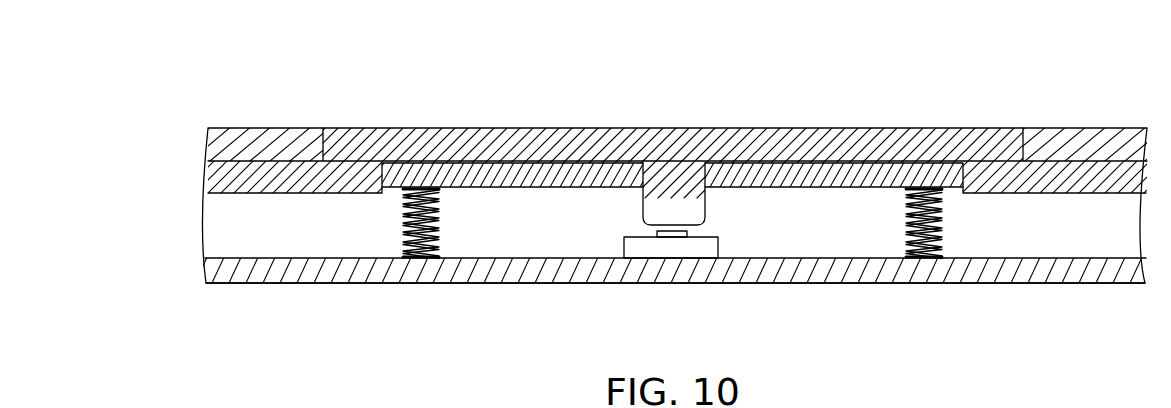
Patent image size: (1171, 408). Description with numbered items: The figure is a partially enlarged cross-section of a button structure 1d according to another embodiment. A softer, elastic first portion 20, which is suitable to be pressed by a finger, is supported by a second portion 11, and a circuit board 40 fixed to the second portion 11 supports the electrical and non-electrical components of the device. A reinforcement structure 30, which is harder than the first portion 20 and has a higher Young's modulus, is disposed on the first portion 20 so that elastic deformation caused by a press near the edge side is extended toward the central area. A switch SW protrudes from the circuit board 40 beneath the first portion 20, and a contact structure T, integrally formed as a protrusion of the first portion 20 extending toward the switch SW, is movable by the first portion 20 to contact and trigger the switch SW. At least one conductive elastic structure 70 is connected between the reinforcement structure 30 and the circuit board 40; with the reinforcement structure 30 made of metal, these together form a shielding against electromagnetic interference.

The button structure 1d is at (253, 75).
The first portion 20 is at (923, 116).
The second portion 11 is at (1113, 125).
The reinforcement structure 30 is at (798, 192).
The contact structure T is at (653, 208).
The switch SW is at (685, 245).
The circuit board 40 is at (980, 275).
The conductive elastic structure 70 is at (438, 230).